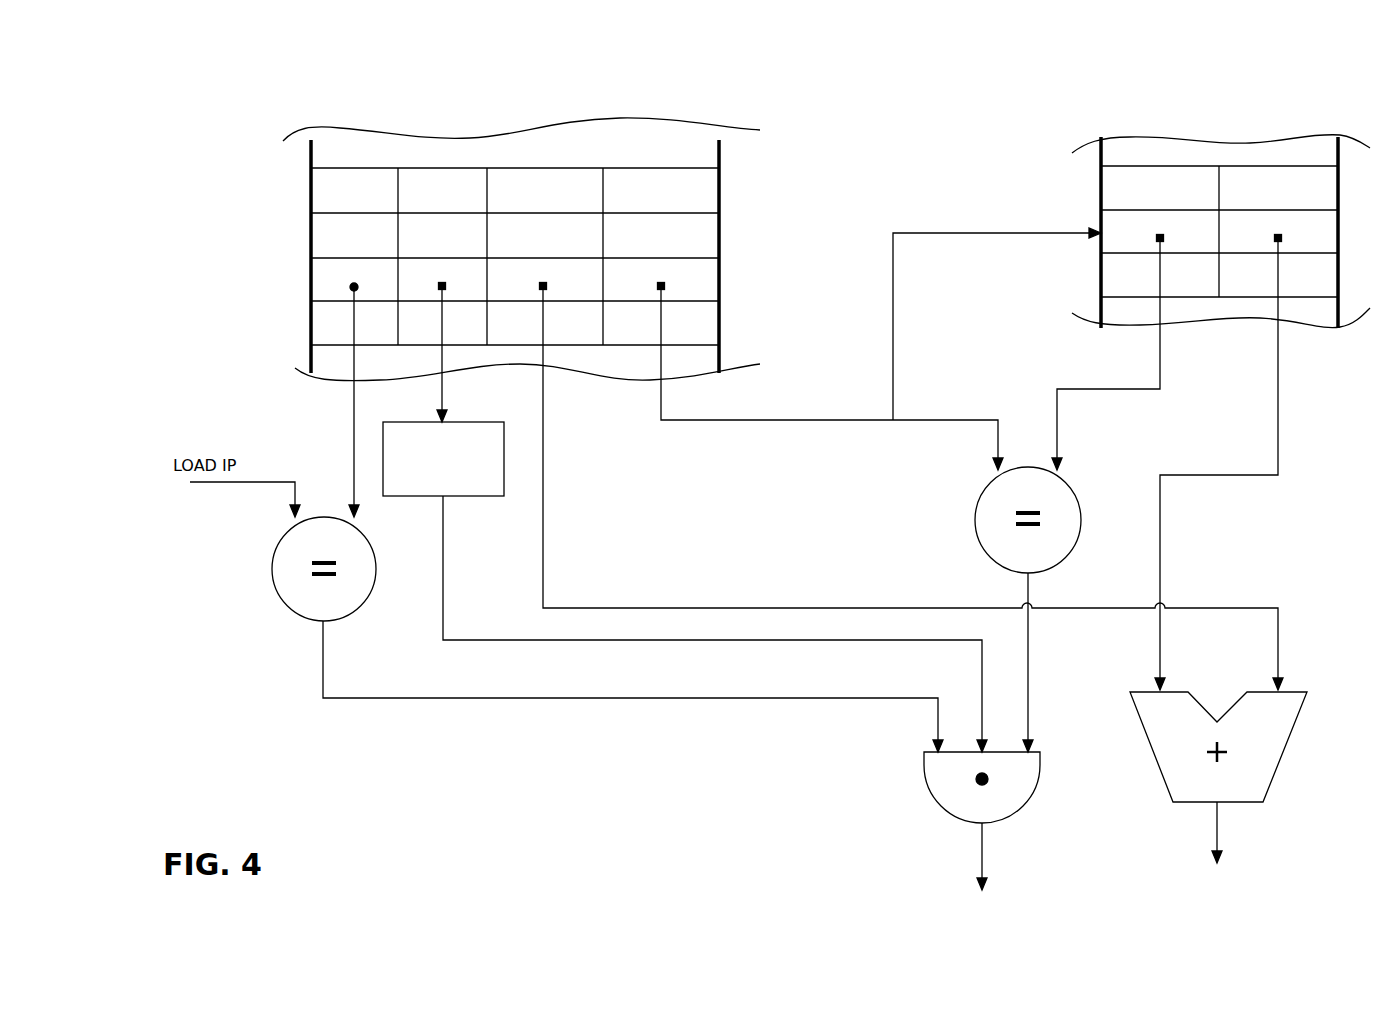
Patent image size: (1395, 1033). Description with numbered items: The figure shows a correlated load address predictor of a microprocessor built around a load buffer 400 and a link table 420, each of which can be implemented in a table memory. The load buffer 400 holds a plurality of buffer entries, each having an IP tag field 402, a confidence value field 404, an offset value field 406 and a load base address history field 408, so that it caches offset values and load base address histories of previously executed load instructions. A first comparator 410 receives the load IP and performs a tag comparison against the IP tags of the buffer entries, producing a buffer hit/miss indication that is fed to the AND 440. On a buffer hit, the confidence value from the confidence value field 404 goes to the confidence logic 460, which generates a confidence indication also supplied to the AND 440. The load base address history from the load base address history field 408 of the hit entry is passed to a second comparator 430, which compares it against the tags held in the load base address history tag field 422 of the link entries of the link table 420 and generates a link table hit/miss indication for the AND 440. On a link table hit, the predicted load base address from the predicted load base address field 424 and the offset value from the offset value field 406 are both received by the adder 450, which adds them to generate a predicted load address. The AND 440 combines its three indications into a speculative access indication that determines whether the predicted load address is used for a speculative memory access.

The load buffer 400 is at (308, 168).
The IP tag field 402 is at (353, 168).
The confidence value field 404 is at (438, 168).
The offset value field 406 is at (542, 168).
The load base address history field 408 is at (653, 168).
The first comparator 410 is at (272, 568).
The link table 420 is at (1100, 173).
The load base address history tag field 422 is at (1157, 166).
The predicted load base address field 424 is at (1257, 166).
The second comparator 430 is at (975, 522).
The AND 440 is at (937, 780).
The adder 450 is at (1163, 760).
The confidence logic 460 is at (503, 468).